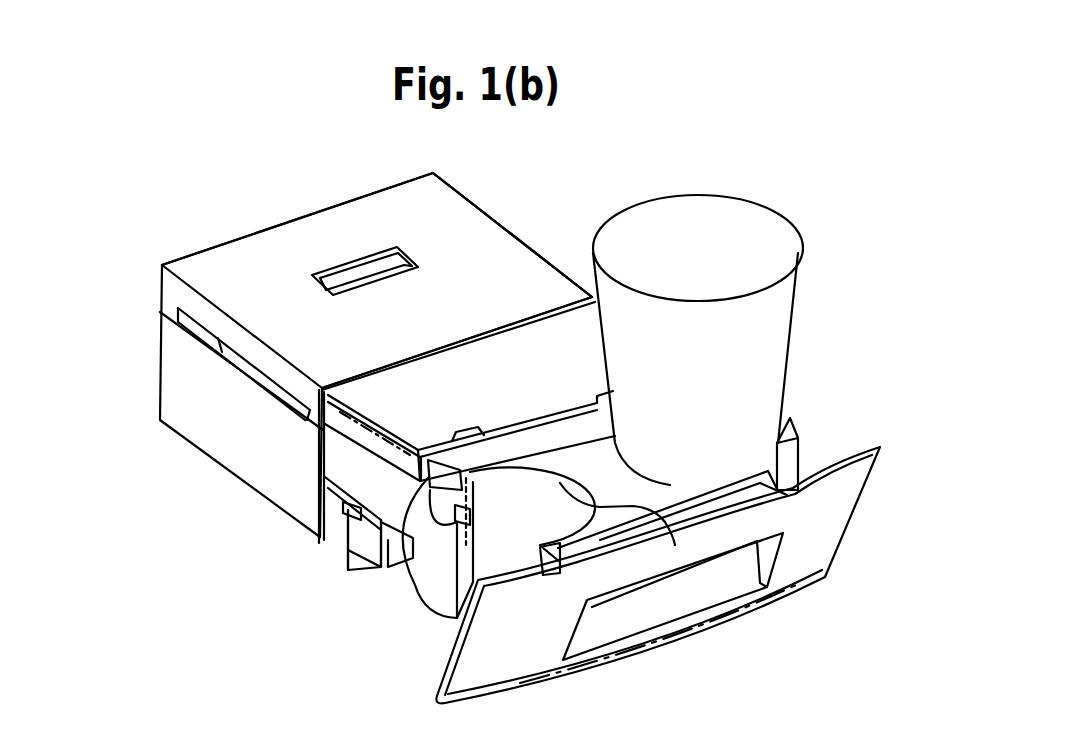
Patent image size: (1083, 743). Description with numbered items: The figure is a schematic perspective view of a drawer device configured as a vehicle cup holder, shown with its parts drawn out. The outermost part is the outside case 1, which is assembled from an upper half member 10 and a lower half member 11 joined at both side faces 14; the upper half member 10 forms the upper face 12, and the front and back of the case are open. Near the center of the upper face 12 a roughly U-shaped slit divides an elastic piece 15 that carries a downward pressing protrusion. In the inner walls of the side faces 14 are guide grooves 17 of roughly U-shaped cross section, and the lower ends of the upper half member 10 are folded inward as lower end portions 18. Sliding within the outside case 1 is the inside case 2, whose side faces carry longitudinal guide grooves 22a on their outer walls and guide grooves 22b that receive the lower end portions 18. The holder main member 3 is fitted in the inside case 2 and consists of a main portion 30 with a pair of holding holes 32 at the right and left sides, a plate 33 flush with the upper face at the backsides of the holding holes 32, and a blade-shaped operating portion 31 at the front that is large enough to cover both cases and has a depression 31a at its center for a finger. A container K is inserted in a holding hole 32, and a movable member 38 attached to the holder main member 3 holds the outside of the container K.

The outside case 1 is at (165, 147).
The upper half member 10 is at (220, 245).
The lower half member 11 is at (160, 340).
The upper face 12 is at (280, 237).
The side faces 14 is at (473, 203).
The elastic piece 15 is at (360, 263).
The guide grooves 17 is at (320, 397).
The inside case 2 is at (537, 356).
The guide grooves 22a is at (328, 420).
The guide grooves 22b is at (346, 570).
The lower end portions 18 is at (335, 503).
The container K is at (768, 210).
The holder main member 3 is at (870, 325).
The main portion 30 is at (687, 500).
The plate 33 is at (592, 420).
The operating portion 31 is at (840, 523).
The depression 31a is at (725, 580).
The holding holes 32 is at (660, 482).
The movable member 38 is at (792, 428).